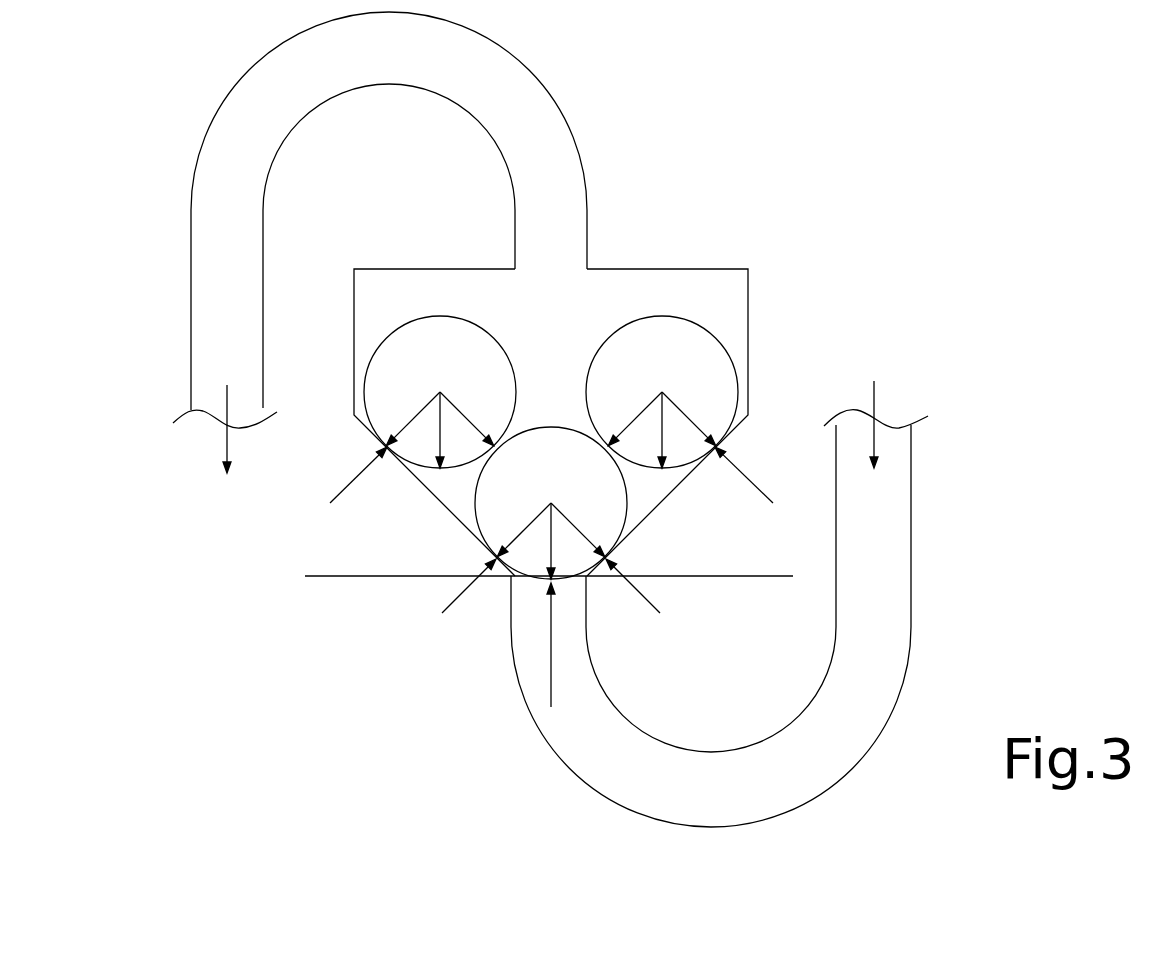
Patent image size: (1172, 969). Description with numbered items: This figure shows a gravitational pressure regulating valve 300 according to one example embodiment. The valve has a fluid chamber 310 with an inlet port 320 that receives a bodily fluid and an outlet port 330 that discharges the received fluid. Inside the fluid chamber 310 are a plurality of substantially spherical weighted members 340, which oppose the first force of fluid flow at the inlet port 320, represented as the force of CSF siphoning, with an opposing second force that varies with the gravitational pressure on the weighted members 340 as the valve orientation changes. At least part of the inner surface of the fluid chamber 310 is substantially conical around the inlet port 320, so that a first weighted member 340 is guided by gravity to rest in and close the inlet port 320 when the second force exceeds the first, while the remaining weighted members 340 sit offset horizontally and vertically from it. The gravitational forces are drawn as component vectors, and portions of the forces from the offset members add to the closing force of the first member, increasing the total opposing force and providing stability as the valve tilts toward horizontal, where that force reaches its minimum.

The gravitational pressure regulating valve 300 is at (930, 152).
The fluid chamber 310 is at (729, 311).
The inlet port 320 is at (510, 580).
The outlet port 330 is at (596, 268).
The weighted members 340 is at (552, 427).